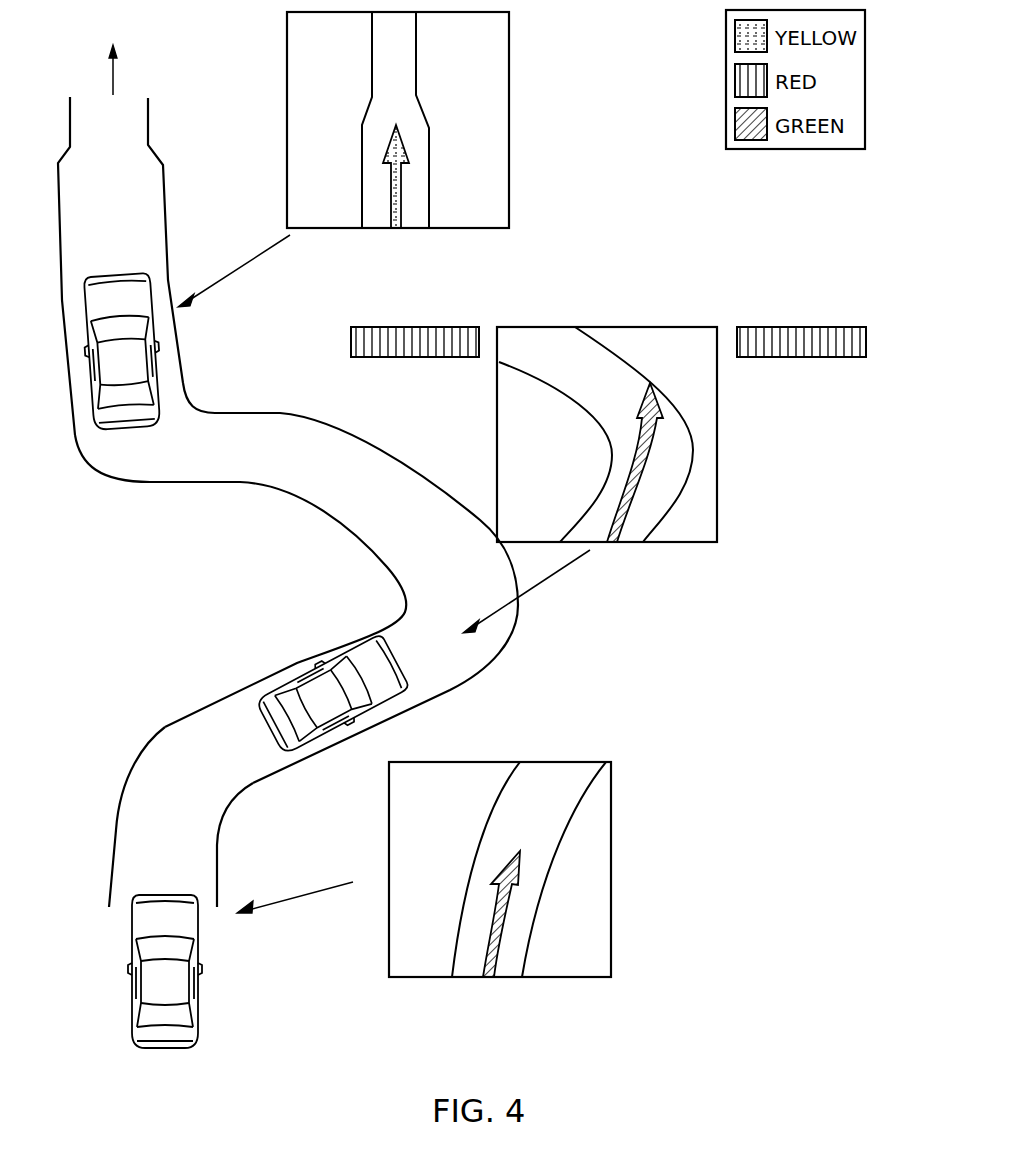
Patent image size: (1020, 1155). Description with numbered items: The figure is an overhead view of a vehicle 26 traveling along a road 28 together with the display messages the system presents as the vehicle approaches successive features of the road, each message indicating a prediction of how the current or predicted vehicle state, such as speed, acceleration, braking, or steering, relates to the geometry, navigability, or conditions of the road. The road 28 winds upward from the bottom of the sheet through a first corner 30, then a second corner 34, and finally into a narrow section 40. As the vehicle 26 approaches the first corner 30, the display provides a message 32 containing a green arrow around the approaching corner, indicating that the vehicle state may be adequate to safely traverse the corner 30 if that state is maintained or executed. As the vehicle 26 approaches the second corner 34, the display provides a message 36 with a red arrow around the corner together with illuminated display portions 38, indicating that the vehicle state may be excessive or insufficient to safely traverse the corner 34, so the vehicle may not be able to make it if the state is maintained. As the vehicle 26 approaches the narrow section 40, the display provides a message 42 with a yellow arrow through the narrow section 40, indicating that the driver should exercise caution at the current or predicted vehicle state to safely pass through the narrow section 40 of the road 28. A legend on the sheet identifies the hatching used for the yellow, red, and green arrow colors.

The vehicle 26 is at (173, 1042).
The road 28 is at (295, 663).
The first corner 30 is at (172, 742).
The message 32 is at (596, 880).
The second corner 34 is at (498, 632).
The message 36 is at (708, 470).
The illuminated display portions 38 is at (389, 330).
The narrow section 40 is at (123, 152).
The message 42 is at (483, 113).